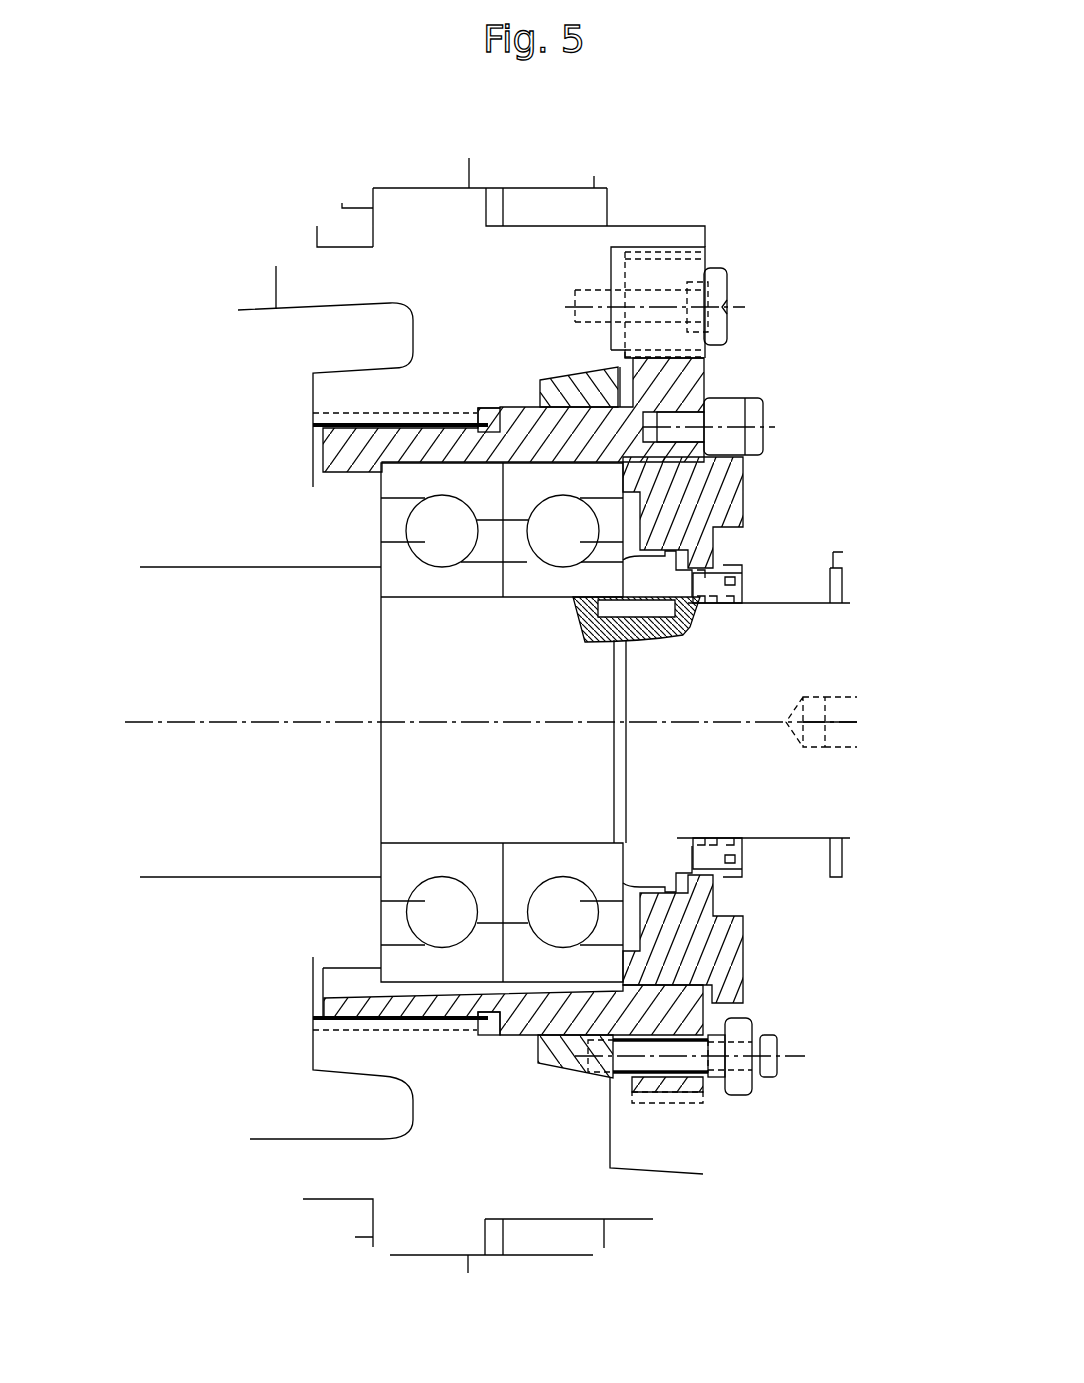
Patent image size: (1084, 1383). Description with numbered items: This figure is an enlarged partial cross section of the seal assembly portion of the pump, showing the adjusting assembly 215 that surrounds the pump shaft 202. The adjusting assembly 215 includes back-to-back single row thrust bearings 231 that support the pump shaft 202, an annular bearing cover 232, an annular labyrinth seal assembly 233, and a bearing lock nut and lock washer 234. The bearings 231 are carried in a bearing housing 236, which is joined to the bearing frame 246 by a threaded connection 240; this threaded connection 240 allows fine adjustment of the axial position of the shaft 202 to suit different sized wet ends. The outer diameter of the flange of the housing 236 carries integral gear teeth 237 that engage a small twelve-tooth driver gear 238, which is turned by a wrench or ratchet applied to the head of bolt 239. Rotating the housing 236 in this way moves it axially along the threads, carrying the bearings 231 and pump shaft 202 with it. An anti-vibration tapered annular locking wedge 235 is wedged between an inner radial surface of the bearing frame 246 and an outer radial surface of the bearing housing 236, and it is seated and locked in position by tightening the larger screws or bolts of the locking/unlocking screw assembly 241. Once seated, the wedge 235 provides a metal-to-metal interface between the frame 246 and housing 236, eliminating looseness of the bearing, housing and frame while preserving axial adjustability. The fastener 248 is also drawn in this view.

The pump shaft 202 is at (803, 653).
The adjusting assembly 215 is at (193, 383).
The back-to-back single row thrust bearings 231 is at (524, 582).
The annular bearing cover 232 is at (733, 480).
The annular labyrinth seal assembly 233 is at (712, 585).
The bearing lock nut and lock washer 234 is at (657, 590).
The anti-vibration tapered annular locking wedge 235 is at (548, 385).
The bearing housing 236 is at (335, 450).
The gear teeth 237 is at (665, 352).
The driver gear 238 is at (660, 290).
The bolt 239 is at (725, 297).
The threaded connection 240 is at (458, 418).
The locking/unlocking screw assembly 241 is at (743, 1040).
The bearing frame 246 is at (357, 387).
The bolt 248 is at (757, 410).